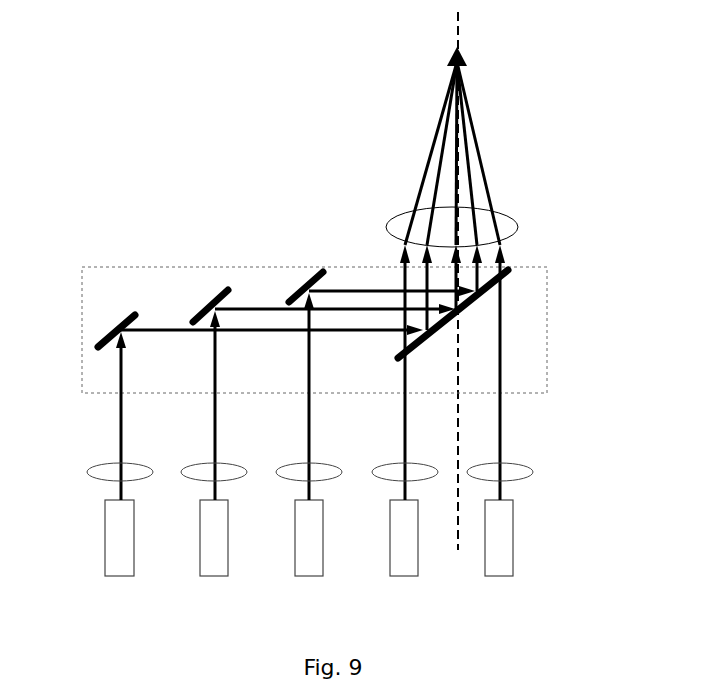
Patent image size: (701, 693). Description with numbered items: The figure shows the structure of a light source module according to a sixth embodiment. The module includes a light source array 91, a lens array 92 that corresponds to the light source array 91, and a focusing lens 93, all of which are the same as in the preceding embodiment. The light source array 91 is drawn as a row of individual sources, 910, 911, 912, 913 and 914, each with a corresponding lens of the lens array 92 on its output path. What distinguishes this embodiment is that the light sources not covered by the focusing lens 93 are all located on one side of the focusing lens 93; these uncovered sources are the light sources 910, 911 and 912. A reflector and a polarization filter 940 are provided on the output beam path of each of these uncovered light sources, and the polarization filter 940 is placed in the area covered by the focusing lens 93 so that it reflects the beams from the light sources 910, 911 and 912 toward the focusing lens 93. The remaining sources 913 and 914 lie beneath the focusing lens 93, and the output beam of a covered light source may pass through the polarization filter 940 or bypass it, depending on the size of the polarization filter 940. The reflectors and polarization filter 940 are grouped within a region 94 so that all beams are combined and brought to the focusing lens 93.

The light source array 91 is at (543, 522).
The lens array 92 is at (541, 438).
The focusing lens 93 is at (488, 197).
The beam combining unit 94 is at (356, 321).
The polarization filter 940 is at (501, 277).
The light source 910 is at (94, 493).
The light source 911 is at (187, 483).
The light source 912 is at (284, 474).
The fourth light source 913 is at (430, 458).
The fifth light source 914 is at (541, 458).